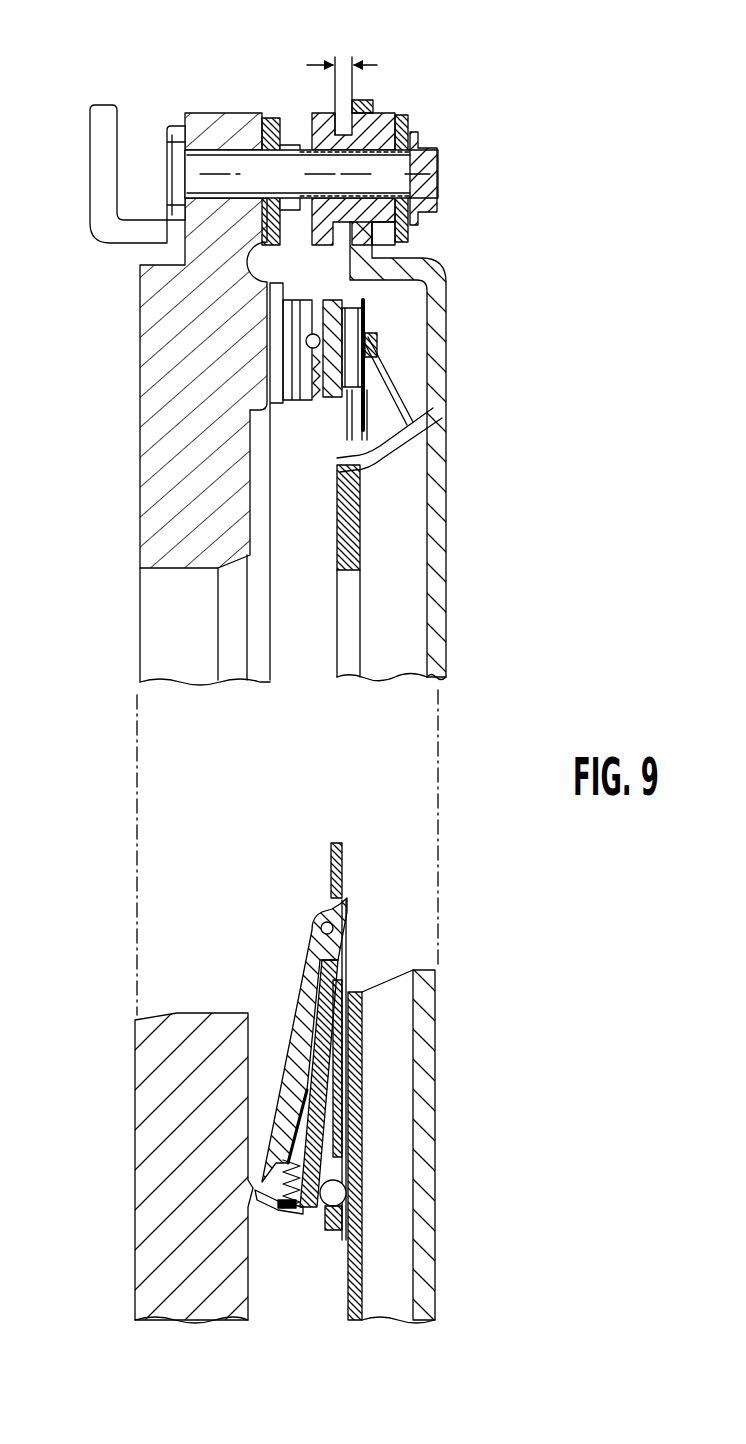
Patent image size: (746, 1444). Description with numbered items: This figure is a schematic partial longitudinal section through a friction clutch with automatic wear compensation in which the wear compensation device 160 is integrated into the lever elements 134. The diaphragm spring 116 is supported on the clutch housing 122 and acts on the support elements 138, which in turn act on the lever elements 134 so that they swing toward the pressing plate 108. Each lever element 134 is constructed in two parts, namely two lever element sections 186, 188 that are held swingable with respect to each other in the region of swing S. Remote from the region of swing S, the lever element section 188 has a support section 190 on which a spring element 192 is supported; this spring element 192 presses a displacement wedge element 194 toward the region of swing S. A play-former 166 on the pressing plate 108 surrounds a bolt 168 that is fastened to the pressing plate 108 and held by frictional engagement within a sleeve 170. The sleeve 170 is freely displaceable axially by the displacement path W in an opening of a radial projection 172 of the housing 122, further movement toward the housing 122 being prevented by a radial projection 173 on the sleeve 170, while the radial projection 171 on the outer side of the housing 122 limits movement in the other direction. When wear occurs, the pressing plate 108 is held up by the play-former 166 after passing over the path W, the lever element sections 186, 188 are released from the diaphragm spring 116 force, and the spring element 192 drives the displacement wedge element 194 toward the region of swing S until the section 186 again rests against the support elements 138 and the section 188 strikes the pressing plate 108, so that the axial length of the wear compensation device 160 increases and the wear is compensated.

The pressing plate 108 is at (163, 528).
The diaphragm spring 116 is at (433, 377).
The clutch housing 122 is at (431, 1032).
The lever element 134 is at (313, 972).
The support element 138 is at (378, 322).
The wear compensation device 160 is at (238, 1165).
The play-former 166 is at (215, 96).
The bolt 168 is at (402, 172).
The sleeve 170 is at (395, 116).
The radial projection of the sleeve 171 is at (397, 236).
The radial projection of the housing 172 is at (363, 100).
The radial projection on the sleeve 173 is at (313, 118).
The lever element section 186 is at (346, 470).
The lever element section 188 is at (293, 358).
The support section 190 is at (280, 383).
The spring element 192 is at (306, 343).
The displacement wedge element 194 is at (314, 398).
The region of swing S is at (310, 919).
The displacement path W is at (337, 62).